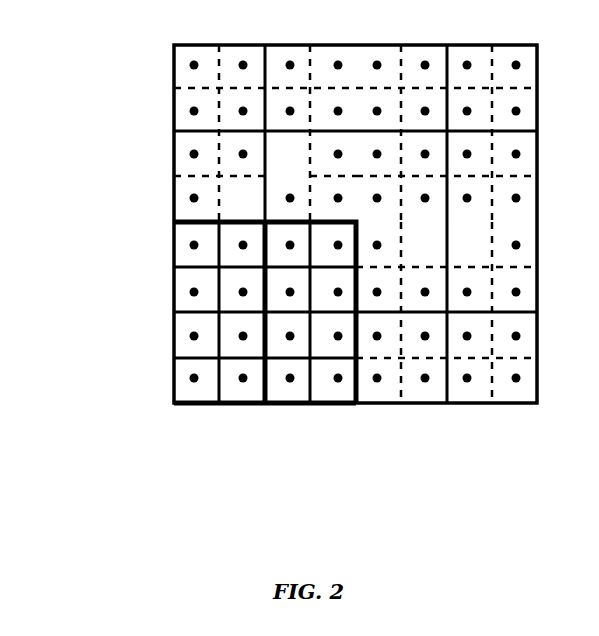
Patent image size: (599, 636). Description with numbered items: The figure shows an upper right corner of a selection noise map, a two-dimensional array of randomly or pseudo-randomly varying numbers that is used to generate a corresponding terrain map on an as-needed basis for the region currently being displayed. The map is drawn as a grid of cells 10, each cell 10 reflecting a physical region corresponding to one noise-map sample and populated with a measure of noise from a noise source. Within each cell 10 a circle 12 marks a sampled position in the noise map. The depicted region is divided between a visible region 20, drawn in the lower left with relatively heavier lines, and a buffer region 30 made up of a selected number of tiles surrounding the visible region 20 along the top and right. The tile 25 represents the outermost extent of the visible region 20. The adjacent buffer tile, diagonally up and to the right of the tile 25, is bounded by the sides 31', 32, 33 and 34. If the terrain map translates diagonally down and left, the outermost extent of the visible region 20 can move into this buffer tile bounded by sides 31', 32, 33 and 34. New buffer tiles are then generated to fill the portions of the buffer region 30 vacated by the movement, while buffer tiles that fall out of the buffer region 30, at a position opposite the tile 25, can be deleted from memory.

The cell 10 is at (204, 56).
The circle 12 is at (520, 337).
The visible region 20 is at (108, 404).
The tile 25 is at (293, 226).
The buffer region 30 is at (155, 223).
The side of buffer tile 31' is at (310, 175).
The side of buffer tile 32 is at (450, 207).
The side of buffer tile 33 is at (408, 131).
The side of buffer tile 34 is at (400, 223).